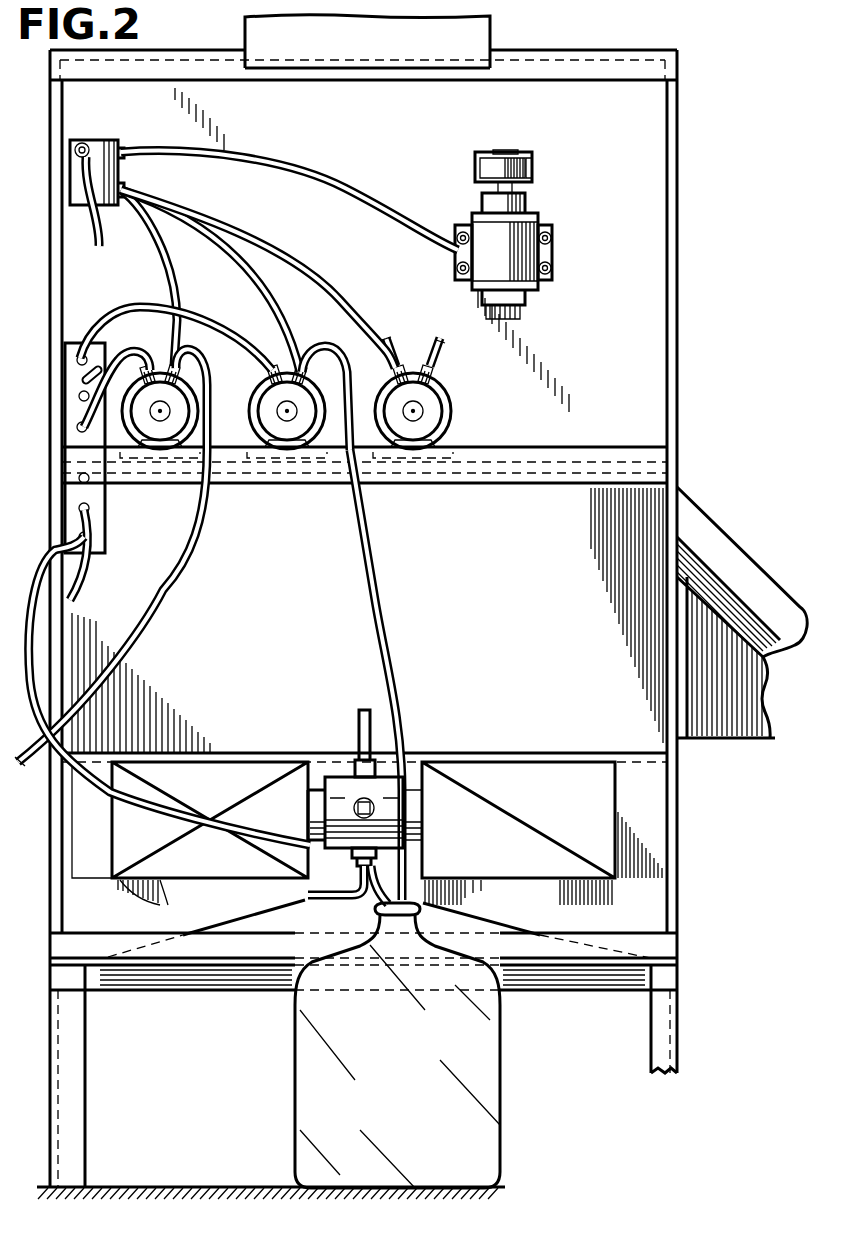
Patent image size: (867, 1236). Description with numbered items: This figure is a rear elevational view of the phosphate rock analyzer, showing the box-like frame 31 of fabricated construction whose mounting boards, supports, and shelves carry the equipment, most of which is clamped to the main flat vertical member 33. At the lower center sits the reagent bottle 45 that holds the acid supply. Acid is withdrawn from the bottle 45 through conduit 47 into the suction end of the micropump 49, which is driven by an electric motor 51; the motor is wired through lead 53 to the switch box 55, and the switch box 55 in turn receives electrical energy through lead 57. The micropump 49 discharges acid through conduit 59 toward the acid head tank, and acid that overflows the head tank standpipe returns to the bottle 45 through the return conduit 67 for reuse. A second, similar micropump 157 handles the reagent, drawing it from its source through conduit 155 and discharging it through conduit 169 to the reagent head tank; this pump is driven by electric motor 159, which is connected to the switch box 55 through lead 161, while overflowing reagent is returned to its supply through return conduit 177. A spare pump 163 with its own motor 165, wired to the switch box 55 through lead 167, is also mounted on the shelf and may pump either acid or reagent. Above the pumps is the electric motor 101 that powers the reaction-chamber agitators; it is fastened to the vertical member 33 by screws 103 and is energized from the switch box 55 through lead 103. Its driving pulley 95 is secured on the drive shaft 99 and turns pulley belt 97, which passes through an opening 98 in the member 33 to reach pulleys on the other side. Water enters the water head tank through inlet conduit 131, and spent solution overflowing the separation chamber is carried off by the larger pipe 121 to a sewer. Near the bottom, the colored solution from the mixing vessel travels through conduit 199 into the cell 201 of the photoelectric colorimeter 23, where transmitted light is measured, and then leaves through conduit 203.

The colorimeter 23 is at (330, 775).
The frame 31 is at (686, 378).
The main flat vertical member 33 is at (371, 217).
The reagent bottle 45 is at (300, 1048).
The conduit 47 is at (383, 580).
The micropump 49 is at (263, 428).
The electric motor 51 is at (326, 398).
The lead 53 is at (217, 281).
The switch box 55 is at (100, 140).
The lead 57 is at (96, 245).
The conduit 59 is at (205, 324).
The return conduit 67 is at (56, 544).
The driving pulley 95 is at (476, 167).
The pulley belt 97 is at (533, 166).
The opening 98 is at (521, 141).
The drive shaft 99 is at (496, 157).
The electric motor 101 is at (480, 226).
The screws / lead 103 is at (332, 203).
The pipe 121 is at (728, 536).
The inlet conduit 131 is at (84, 378).
The conduit 155 is at (160, 641).
The micropump 157 is at (166, 452).
The electric motor 159 is at (194, 393).
The lead 161 is at (174, 282).
The spare pump 163 is at (441, 418).
The motor 165 is at (447, 386).
The lead 167 is at (332, 302).
The conduit 169 is at (78, 429).
The return conduit 177 is at (84, 591).
The conduit 199 is at (338, 898).
The cell 201 is at (383, 792).
The conduit 203 is at (358, 712).